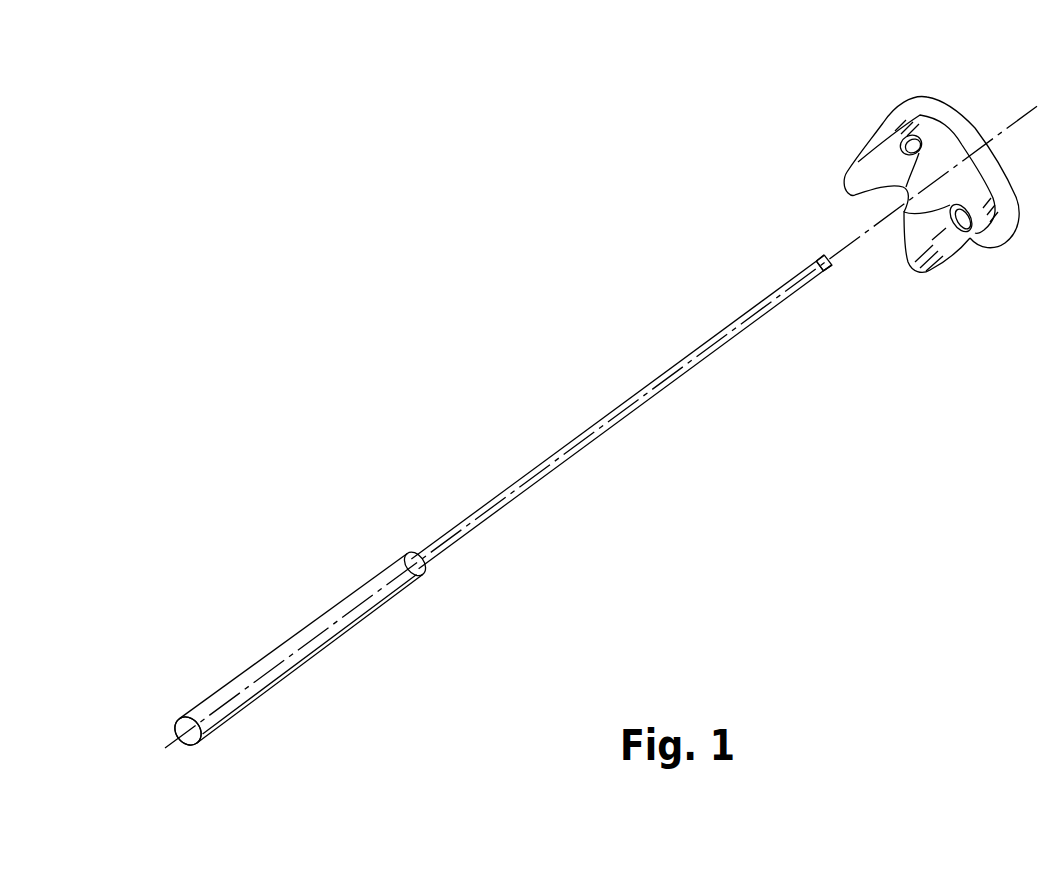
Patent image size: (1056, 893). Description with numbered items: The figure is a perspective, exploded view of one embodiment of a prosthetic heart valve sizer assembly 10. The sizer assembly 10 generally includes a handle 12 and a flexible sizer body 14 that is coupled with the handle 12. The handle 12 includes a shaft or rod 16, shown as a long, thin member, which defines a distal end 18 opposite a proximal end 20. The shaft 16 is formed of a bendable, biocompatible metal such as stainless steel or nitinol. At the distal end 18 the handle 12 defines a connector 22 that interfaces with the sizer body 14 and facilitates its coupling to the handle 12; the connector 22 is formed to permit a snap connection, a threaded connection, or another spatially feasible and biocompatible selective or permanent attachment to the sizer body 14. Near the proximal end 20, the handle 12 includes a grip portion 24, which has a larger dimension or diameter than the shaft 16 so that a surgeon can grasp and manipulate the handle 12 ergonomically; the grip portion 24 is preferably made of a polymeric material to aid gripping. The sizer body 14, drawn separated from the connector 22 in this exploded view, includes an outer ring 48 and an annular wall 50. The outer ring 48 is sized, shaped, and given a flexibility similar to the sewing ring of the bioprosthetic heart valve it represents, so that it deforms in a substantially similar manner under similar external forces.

The prosthetic heart valve sizer assembly 10 is at (393, 315).
The handle 12 is at (434, 513).
The flexible sizer body 14 is at (888, 85).
The shaft 16 is at (640, 390).
The distal end 18 is at (818, 268).
The proximal end 20 is at (215, 735).
The connector 22 is at (817, 258).
The grip portion 24 is at (303, 629).
The outer ring 48 is at (955, 113).
The annular wall 50 is at (867, 162).